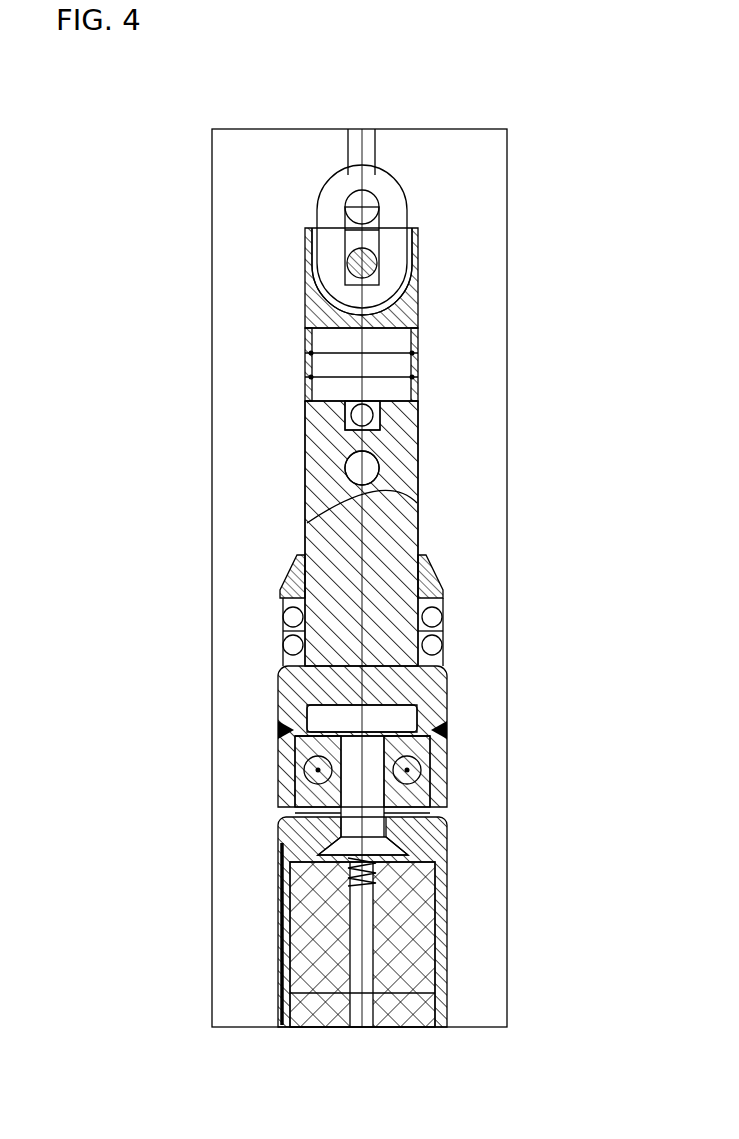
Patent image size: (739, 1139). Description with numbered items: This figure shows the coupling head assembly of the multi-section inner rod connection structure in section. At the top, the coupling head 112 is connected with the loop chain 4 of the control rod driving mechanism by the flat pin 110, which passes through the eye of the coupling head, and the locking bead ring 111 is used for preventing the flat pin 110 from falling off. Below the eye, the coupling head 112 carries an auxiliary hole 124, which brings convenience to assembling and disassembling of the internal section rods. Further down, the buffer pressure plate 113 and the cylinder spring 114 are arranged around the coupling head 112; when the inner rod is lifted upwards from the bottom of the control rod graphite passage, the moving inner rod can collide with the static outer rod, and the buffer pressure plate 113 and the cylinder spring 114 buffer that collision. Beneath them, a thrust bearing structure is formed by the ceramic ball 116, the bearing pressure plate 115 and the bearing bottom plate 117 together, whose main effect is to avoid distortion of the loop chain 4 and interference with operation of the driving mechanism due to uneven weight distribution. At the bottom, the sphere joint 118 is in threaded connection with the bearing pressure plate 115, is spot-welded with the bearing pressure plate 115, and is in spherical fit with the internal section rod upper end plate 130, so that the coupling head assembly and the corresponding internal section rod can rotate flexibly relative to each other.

The loop chain 4 is at (398, 211).
The flat pin 110 is at (395, 345).
The locking bead ring 111 is at (311, 377).
The coupling head 112 is at (397, 548).
The buffer pressure plate 113 is at (293, 588).
The cylinder spring 114 is at (434, 647).
The bearing pressure plate 115 is at (433, 720).
The ceramic ball 116 is at (281, 737).
The bearing bottom plate 117 is at (423, 790).
The sphere joint 118 is at (352, 842).
The auxiliary hole 124 is at (352, 470).
The internal section rod upper end plate 130 is at (442, 843).